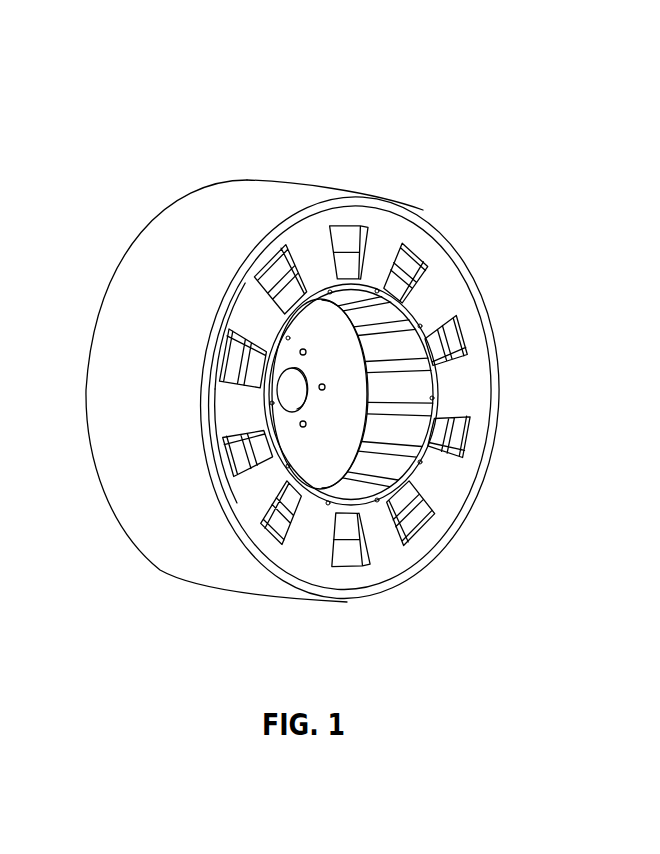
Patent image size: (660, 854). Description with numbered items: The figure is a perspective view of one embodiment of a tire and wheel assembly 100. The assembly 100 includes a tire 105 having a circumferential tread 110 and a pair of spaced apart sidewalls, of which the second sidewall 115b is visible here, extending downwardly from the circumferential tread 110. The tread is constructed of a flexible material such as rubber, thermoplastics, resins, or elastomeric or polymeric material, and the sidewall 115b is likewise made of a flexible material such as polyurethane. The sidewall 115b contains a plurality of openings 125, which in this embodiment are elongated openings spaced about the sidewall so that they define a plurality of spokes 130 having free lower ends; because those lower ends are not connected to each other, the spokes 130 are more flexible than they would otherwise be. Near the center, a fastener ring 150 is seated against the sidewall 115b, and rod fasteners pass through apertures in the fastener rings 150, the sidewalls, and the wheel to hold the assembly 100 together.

The tire and wheel assembly 100 is at (505, 122).
The tire 105 is at (498, 248).
The circumferential tread 110 is at (265, 195).
The second sidewall 115b is at (465, 385).
The openings 125 is at (347, 233).
The spokes 130 is at (370, 530).
The fastener rings 150 is at (317, 497).